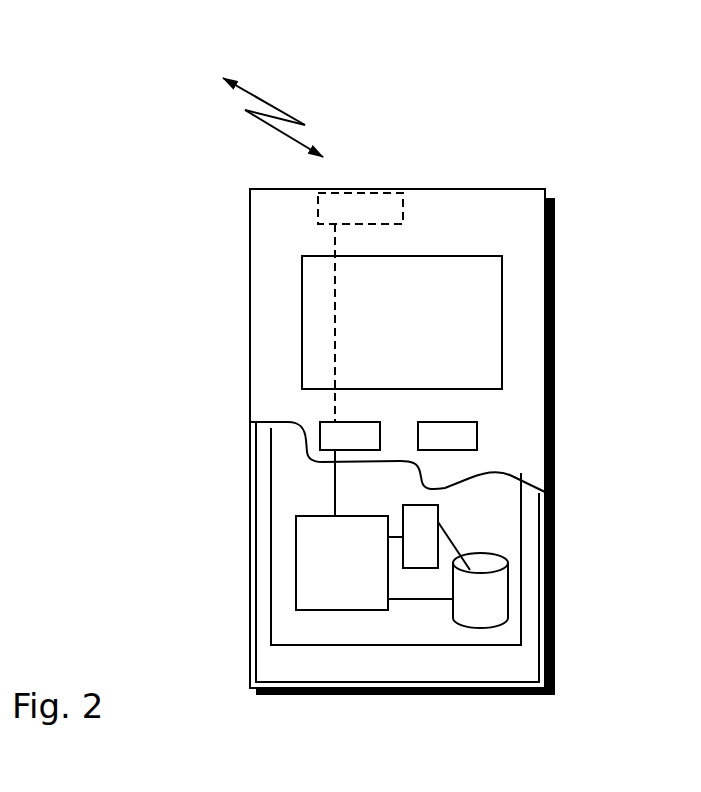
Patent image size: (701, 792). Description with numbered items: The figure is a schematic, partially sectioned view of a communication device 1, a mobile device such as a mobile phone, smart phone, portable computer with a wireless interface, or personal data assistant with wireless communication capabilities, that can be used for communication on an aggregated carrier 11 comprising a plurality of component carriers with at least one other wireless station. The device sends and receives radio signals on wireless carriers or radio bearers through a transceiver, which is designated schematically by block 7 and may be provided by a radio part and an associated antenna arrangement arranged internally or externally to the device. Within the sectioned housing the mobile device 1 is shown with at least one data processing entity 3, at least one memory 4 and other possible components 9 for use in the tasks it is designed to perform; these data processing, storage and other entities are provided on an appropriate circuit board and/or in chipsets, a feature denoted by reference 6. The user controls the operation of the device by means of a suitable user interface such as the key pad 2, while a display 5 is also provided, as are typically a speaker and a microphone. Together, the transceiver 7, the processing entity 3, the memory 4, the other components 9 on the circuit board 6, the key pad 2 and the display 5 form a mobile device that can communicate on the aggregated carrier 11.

The communication device 1 is at (253, 230).
The key pad 2 is at (320, 438).
The data processing entity 3 is at (302, 546).
The memory 4 is at (475, 602).
The display 5 is at (318, 308).
The circuit board 6 is at (295, 628).
The transceiver 7 is at (345, 207).
The other possible components 9 is at (420, 520).
The aggregated carrier 11 is at (243, 88).